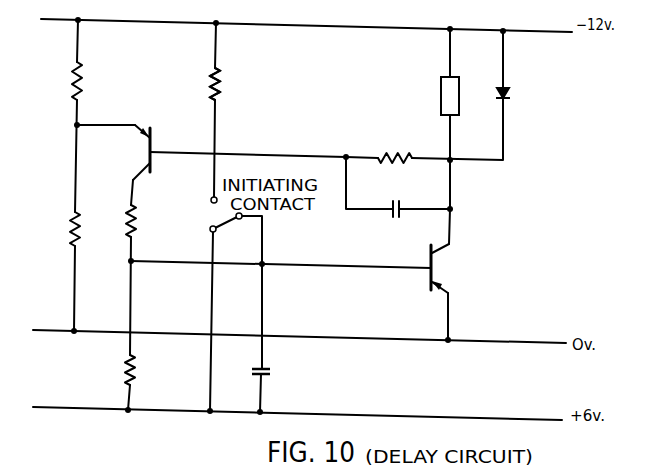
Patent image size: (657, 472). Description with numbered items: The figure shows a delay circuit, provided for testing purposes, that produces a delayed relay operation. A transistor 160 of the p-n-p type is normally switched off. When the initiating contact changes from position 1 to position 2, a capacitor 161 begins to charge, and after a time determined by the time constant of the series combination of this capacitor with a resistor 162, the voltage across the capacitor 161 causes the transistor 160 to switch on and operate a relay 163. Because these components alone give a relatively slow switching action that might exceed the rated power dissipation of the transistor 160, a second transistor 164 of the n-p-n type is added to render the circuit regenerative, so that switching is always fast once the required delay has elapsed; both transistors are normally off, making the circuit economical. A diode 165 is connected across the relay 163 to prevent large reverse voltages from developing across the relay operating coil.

The transistor 160 is at (465, 277).
The capacitor 161 is at (265, 366).
The resistor 162 is at (221, 80).
The relay 163 is at (441, 90).
The second transistor 164 is at (145, 160).
The diode 165 is at (508, 93).
The position 1 is at (206, 234).
The position 2 is at (205, 199).